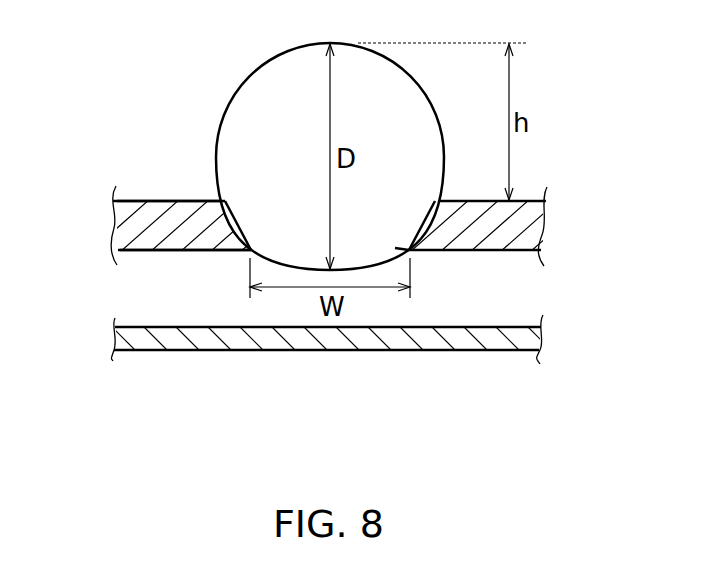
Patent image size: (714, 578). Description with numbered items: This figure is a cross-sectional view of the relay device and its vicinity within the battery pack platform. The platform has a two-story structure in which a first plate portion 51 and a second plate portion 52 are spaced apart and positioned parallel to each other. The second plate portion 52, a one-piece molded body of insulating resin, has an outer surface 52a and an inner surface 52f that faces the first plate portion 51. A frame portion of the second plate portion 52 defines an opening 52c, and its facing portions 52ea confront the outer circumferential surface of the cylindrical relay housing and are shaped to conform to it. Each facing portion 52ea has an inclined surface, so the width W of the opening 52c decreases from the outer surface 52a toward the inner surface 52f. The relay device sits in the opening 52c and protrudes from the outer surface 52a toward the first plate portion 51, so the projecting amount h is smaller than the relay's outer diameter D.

The first plate portion 51 is at (534, 337).
The second plate portion 52 is at (529, 222).
The outer surface 52a is at (150, 200).
The inner surface 52f is at (147, 252).
The facing portions 52ea is at (247, 203).
The opening 52c is at (400, 250).